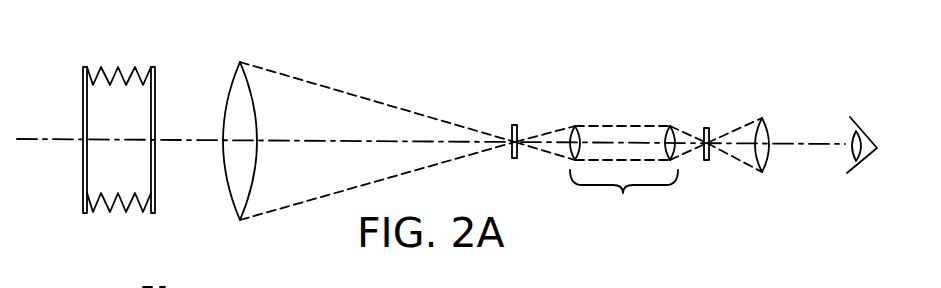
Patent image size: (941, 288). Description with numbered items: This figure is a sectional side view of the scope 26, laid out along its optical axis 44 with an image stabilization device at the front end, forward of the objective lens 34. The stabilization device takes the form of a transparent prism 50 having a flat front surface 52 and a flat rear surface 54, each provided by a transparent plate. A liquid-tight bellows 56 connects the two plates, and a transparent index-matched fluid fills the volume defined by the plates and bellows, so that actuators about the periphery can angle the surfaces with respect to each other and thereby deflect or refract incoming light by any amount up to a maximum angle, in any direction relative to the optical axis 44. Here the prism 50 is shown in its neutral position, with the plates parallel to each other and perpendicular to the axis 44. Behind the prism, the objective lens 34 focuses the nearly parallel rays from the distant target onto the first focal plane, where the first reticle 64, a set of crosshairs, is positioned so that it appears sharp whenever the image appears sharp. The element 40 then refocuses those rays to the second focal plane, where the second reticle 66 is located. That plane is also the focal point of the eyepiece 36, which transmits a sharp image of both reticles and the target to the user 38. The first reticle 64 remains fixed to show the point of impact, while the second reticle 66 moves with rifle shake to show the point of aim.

The scope 26 is at (553, 68).
The objective lens 34 is at (253, 98).
The eyepiece 36 is at (768, 130).
The user 38 is at (868, 123).
The element 40 is at (611, 174).
The optical axis 44 is at (315, 140).
The transparent prism 50 is at (116, 133).
The flat front surface 52 is at (83, 122).
The flat rear surface 54 is at (155, 125).
The liquid-tight bellows 56 is at (117, 206).
The first reticle 64 is at (515, 126).
The second reticle 66 is at (706, 127).